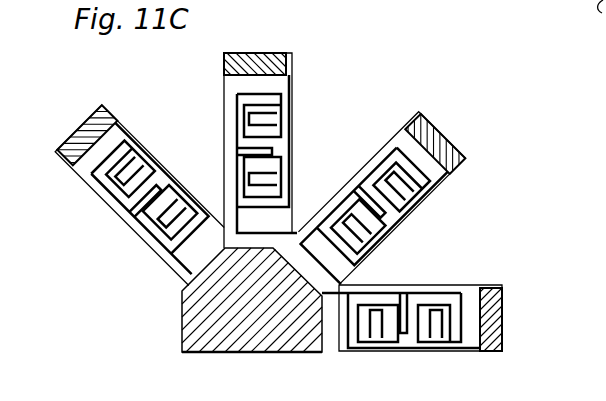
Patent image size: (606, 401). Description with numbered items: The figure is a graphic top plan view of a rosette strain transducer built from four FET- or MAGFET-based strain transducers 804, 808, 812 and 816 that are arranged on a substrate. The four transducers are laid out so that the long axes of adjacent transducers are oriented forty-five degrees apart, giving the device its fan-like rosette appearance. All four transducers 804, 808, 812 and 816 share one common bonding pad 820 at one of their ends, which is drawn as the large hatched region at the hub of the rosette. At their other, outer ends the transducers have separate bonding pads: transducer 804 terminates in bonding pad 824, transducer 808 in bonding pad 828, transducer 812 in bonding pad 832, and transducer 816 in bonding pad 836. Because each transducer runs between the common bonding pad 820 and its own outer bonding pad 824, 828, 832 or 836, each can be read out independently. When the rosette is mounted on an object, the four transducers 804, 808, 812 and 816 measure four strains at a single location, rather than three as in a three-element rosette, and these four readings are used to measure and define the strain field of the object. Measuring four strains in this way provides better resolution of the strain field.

The FET- or MAGFET-based strain transducer 804 is at (418, 356).
The FET- or MAGFET-based strain transducer 808 is at (426, 226).
The FET- or MAGFET-based strain transducer 812 is at (300, 118).
The FET- or MAGFET-based strain transducer 816 is at (165, 148).
The common bonding pad 820 is at (253, 332).
The bonding pad 824 is at (504, 318).
The bonding pad 828 is at (440, 127).
The bonding pad 832 is at (262, 58).
The bonding pad 836 is at (86, 124).